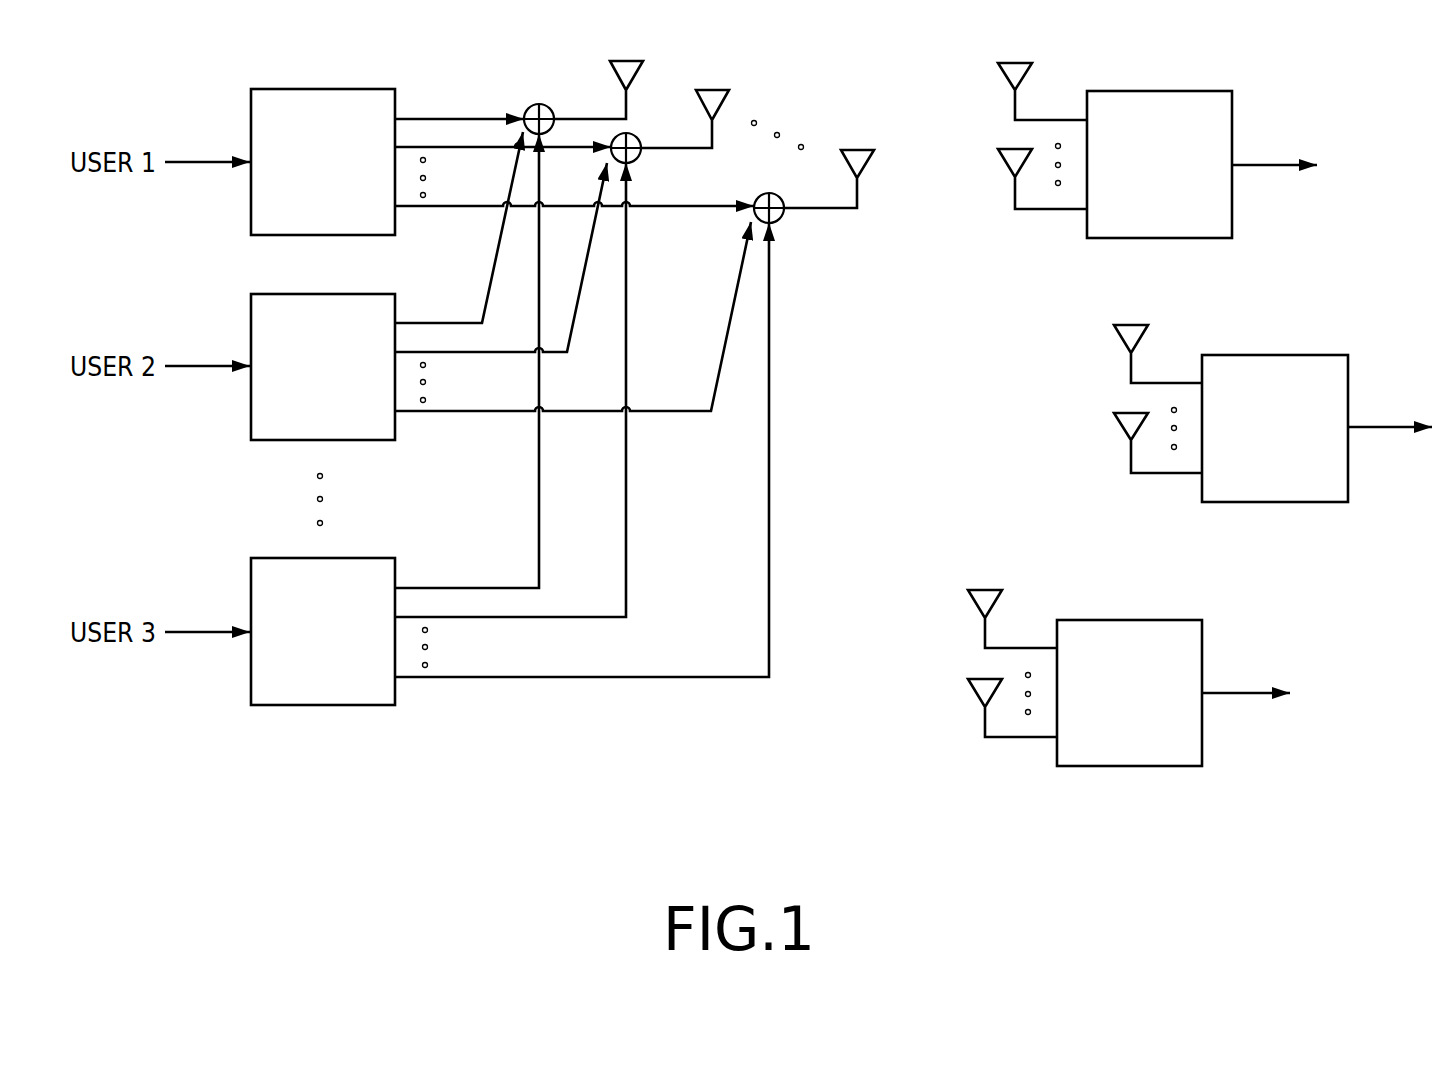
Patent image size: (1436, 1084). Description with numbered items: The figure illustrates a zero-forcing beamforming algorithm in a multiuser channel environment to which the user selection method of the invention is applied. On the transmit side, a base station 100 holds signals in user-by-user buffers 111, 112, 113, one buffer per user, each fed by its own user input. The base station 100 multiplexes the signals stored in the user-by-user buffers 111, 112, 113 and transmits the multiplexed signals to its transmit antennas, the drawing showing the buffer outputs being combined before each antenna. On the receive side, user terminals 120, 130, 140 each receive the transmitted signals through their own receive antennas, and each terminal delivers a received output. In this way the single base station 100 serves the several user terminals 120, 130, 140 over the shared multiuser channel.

The base station 100 is at (543, 742).
The user-by-user buffer 111 is at (251, 236).
The user-by-user buffer 112 is at (251, 441).
The user-by-user buffer 113 is at (282, 706).
The user terminal 120 is at (1235, 225).
The user terminal 130 is at (1278, 503).
The user terminal 140 is at (1147, 767).